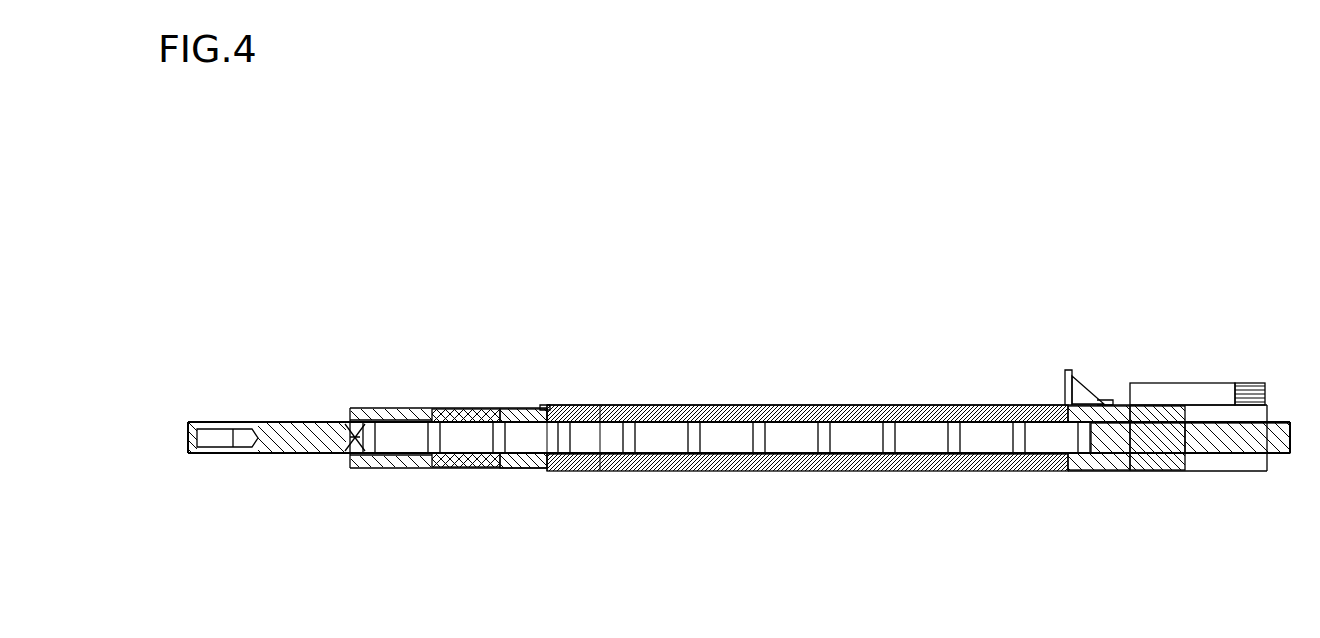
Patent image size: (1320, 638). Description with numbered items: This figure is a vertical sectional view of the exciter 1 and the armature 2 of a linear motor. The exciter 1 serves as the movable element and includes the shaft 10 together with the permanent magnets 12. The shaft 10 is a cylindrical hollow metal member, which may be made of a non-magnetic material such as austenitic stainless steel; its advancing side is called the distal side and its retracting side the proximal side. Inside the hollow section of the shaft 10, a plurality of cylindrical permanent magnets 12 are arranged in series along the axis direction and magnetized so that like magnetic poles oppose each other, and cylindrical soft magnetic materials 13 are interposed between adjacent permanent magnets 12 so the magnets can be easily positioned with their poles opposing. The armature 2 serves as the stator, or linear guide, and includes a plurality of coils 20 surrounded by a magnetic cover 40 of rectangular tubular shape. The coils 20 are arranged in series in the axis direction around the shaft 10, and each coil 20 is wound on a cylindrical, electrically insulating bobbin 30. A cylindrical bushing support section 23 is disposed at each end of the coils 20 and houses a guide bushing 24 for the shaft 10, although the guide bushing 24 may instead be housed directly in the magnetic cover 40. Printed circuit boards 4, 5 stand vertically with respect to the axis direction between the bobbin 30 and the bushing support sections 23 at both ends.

The exciter 1 is at (300, 420).
The armature 2 is at (678, 405).
The printed circuit board 4 is at (1065, 398).
The printed circuit board 5 is at (542, 408).
The shaft 10 is at (290, 455).
The permanent magnet 12 is at (657, 426).
The soft magnetic material 13 is at (710, 426).
The coil 20 is at (925, 405).
The bushing support section 23 is at (495, 468).
The guide bushing 24 is at (462, 407).
The bobbin 30 is at (585, 410).
The magnetic cover 40 is at (420, 407).